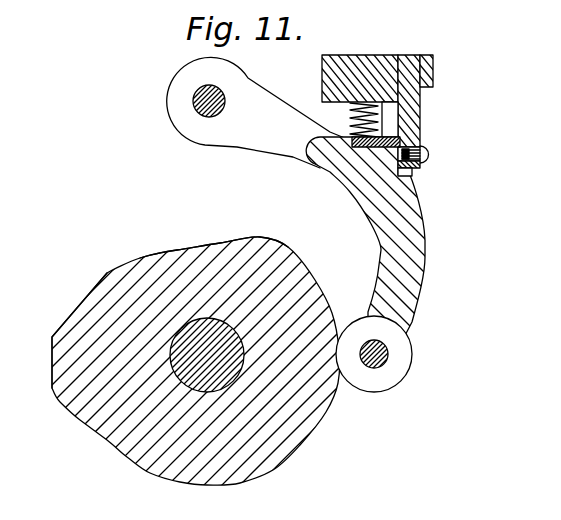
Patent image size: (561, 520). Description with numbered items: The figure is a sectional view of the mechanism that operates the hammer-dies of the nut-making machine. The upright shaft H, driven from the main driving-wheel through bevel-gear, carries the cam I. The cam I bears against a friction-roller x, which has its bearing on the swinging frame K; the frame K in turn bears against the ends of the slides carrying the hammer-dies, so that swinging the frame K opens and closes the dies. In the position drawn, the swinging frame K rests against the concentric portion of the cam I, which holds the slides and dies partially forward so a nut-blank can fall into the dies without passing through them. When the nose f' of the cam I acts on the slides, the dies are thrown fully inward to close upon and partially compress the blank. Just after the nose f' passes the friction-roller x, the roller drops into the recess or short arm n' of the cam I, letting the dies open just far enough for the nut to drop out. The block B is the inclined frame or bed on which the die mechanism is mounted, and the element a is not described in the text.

The bed B is at (357, 64).
The screw stem a is at (406, 101).
The swinging frame K is at (442, 236).
The cam I is at (280, 365).
The recess or short arm n' is at (214, 242).
The nose f' is at (65, 330).
The upright shaft H is at (206, 355).
The friction-roller x is at (372, 354).